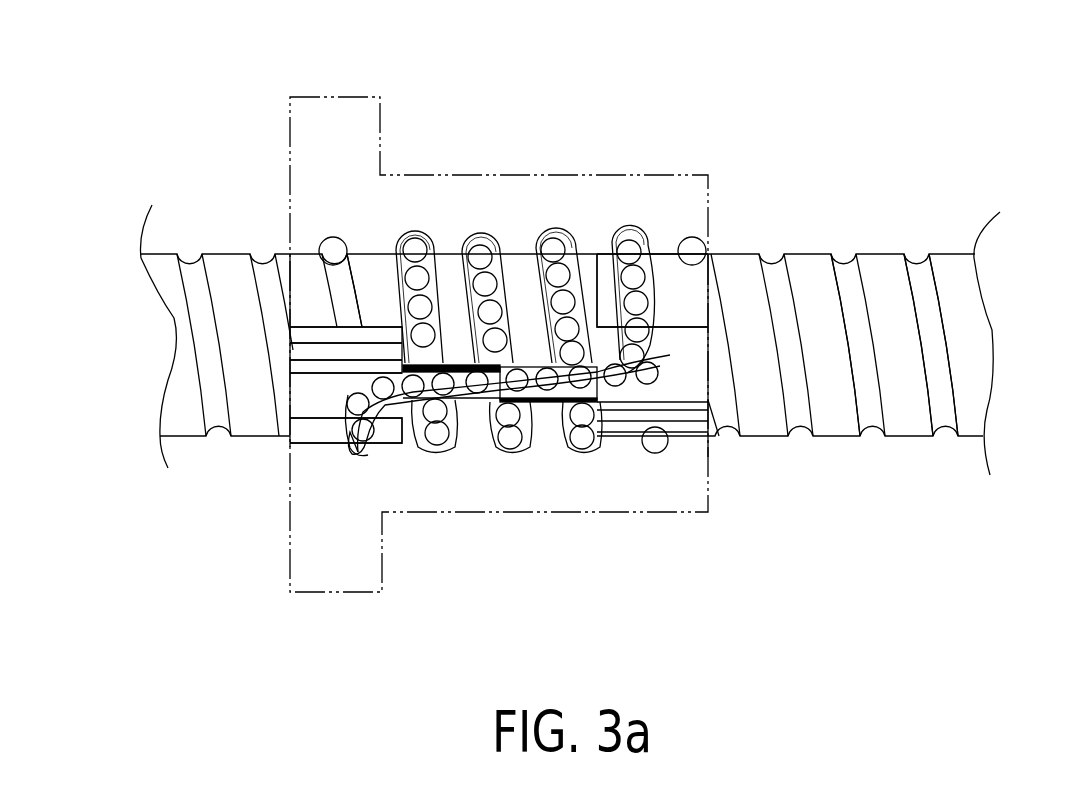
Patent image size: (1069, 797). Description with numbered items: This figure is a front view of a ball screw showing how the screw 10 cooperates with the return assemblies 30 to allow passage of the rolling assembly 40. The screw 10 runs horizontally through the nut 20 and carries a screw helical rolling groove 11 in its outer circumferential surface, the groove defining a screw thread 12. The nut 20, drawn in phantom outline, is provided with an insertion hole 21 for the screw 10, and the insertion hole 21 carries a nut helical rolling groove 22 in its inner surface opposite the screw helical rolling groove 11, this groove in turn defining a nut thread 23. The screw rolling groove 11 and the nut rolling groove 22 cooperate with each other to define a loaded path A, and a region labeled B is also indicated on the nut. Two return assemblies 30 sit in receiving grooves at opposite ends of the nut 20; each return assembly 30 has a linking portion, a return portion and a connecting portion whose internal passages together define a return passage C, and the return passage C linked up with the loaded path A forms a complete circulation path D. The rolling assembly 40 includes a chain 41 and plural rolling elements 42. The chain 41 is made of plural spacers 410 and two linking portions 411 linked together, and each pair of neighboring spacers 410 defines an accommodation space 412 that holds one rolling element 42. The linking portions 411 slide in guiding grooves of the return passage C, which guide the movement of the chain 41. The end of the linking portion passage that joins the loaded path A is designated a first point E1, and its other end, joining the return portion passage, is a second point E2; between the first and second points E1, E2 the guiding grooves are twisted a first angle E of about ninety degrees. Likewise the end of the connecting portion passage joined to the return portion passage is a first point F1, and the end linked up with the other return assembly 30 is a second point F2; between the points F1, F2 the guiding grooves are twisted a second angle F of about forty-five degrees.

The screw 10 is at (877, 254).
The screw helical rolling groove 11 is at (838, 262).
The screw thread 12 is at (947, 279).
The nut 20 is at (468, 178).
The insertion hole 21 is at (288, 273).
The nut helical rolling groove 22 is at (329, 240).
The nut thread 23 is at (550, 435).
The return assembly 30 is at (695, 298).
The rolling assembly 40 is at (562, 252).
The chain 41 is at (660, 372).
The rolling element 42 is at (437, 427).
The spacer 410 is at (507, 253).
The linking portion 411 is at (537, 432).
The accommodation space 412 is at (530, 438).
The loaded path A is at (207, 68).
The region B is at (441, 246).
The return passage C is at (343, 400).
The complete circulation path D is at (68, 290).
The first angle E is at (740, 86).
The first point E1 is at (633, 250).
The second point E2 is at (660, 290).
The second angle F is at (737, 515).
The first point F1 is at (583, 415).
The second point F2 is at (580, 432).